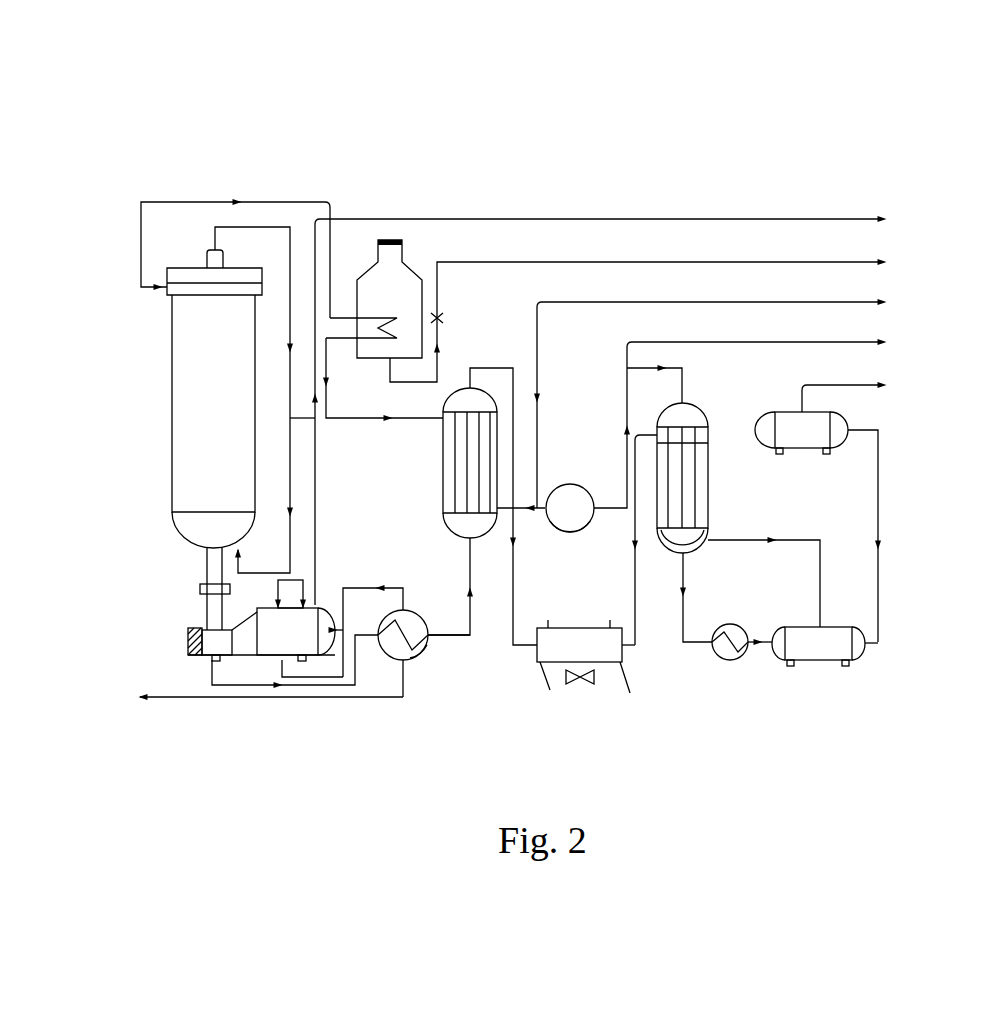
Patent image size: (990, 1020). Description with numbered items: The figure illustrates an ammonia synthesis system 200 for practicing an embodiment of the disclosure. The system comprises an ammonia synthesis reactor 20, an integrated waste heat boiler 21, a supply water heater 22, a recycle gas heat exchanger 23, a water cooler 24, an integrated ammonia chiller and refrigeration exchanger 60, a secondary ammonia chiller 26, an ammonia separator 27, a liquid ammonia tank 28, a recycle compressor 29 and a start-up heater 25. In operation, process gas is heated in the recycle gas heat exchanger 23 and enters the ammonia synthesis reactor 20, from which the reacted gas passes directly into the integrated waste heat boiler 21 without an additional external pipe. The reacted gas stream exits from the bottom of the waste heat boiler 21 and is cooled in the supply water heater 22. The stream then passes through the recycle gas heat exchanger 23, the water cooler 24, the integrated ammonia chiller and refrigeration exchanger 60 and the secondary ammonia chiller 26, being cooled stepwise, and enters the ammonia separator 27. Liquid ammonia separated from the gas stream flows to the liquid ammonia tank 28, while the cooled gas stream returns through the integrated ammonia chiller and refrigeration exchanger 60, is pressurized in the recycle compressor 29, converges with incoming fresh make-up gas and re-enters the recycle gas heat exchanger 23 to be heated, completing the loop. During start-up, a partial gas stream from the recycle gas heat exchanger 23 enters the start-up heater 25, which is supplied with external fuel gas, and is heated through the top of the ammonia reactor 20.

The process system 200 is at (214, 86).
The ammonia synthesis reactor 20 is at (208, 320).
The integrated waste heat boiler 21 is at (262, 645).
The supply water heater 22 is at (397, 650).
The recycle gas heat exchanger 23 is at (465, 400).
The water cooler 24 is at (550, 655).
The start-up heater 25 is at (372, 283).
The secondary ammonia chiller 26 is at (722, 655).
The ammonia separator 27 is at (847, 662).
The liquid ammonia tank 28 is at (833, 433).
The recycle compressor 29 is at (565, 490).
The integrated ammonia chiller and refrigeration exchanger 60 is at (685, 415).